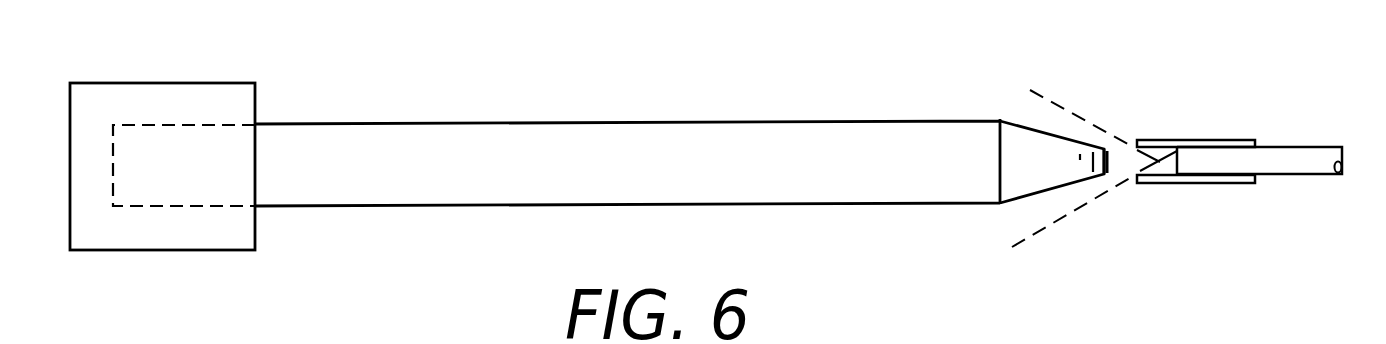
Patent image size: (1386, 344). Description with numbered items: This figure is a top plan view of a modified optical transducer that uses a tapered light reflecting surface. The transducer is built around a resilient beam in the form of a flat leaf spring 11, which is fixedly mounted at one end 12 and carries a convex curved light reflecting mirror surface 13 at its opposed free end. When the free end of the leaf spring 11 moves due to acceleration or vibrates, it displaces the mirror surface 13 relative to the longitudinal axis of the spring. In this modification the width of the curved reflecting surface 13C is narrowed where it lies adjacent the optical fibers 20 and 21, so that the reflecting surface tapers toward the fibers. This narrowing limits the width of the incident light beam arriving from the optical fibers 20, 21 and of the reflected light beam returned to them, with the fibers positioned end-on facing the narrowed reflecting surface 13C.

The flat leaf spring 11 is at (557, 128).
The fixed end 12 is at (173, 140).
The curved light reflecting mirror surface 13 is at (1110, 163).
The curved reflecting surface 13C is at (1010, 132).
The optical fiber 20 is at (1280, 155).
The optical fiber 21 is at (1279, 126).